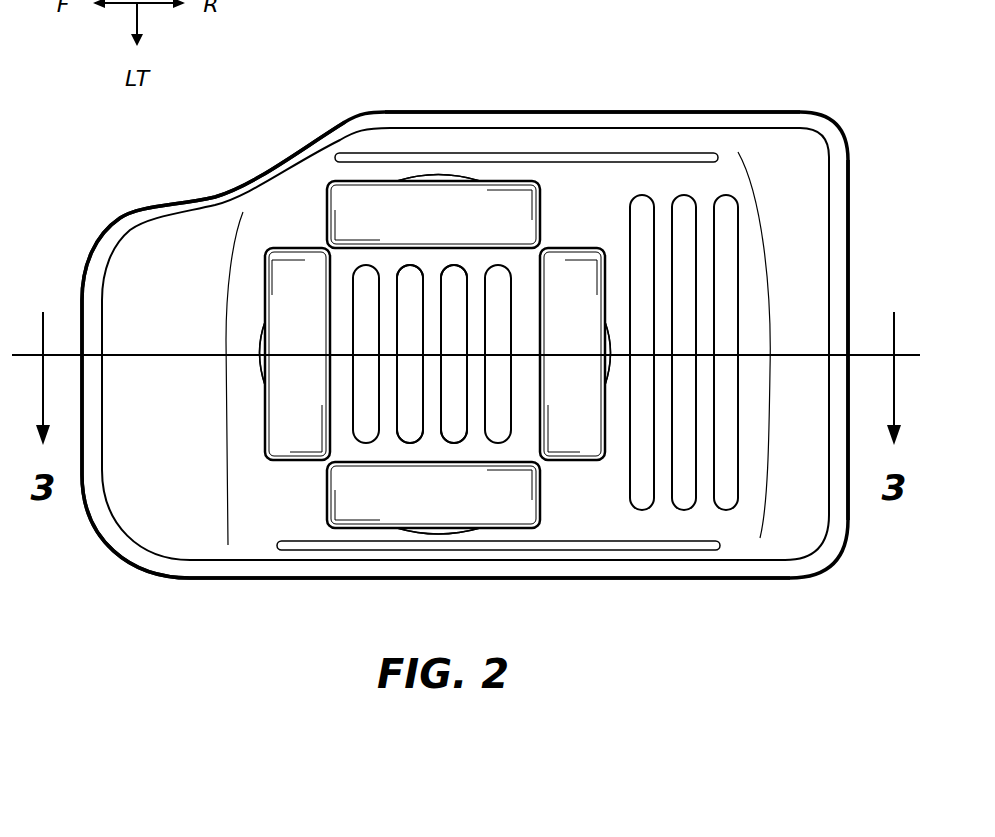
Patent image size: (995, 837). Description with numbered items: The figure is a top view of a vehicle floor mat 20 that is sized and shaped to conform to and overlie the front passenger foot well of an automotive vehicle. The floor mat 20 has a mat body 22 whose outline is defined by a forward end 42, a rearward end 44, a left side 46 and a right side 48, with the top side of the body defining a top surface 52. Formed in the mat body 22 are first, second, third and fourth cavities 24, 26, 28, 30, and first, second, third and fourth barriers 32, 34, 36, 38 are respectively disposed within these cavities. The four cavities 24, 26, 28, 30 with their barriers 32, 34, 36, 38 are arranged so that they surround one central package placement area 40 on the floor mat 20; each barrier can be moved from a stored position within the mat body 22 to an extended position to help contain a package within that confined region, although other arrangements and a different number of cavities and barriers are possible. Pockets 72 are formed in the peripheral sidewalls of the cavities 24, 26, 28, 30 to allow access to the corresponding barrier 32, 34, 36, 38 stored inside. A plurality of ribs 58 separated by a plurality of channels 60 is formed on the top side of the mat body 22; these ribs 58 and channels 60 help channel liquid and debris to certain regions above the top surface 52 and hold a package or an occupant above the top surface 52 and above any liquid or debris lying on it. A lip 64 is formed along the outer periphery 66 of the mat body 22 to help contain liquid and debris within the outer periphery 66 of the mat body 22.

The vehicle floor mat 20 is at (697, 70).
The mat body 22 is at (210, 192).
The first cavity 24 is at (543, 213).
The second cavity 26 is at (556, 470).
The third cavity 28 is at (343, 530).
The fourth cavity 30 is at (264, 255).
The first barrier 32 is at (436, 185).
The second barrier 34 is at (604, 345).
The third barrier 36 is at (482, 530).
The fourth barrier 38 is at (266, 288).
The central package placement area 40 is at (352, 451).
The forward end 42 is at (90, 278).
The rearward end 44 is at (850, 200).
The left side 46 is at (237, 582).
The right side 48 is at (418, 110).
The top surface 52 is at (181, 378).
The ribs 58 is at (412, 262).
The channels 60 is at (430, 442).
The lip 64 is at (143, 540).
The outer periphery 66 is at (133, 562).
The pockets 72 is at (258, 363).